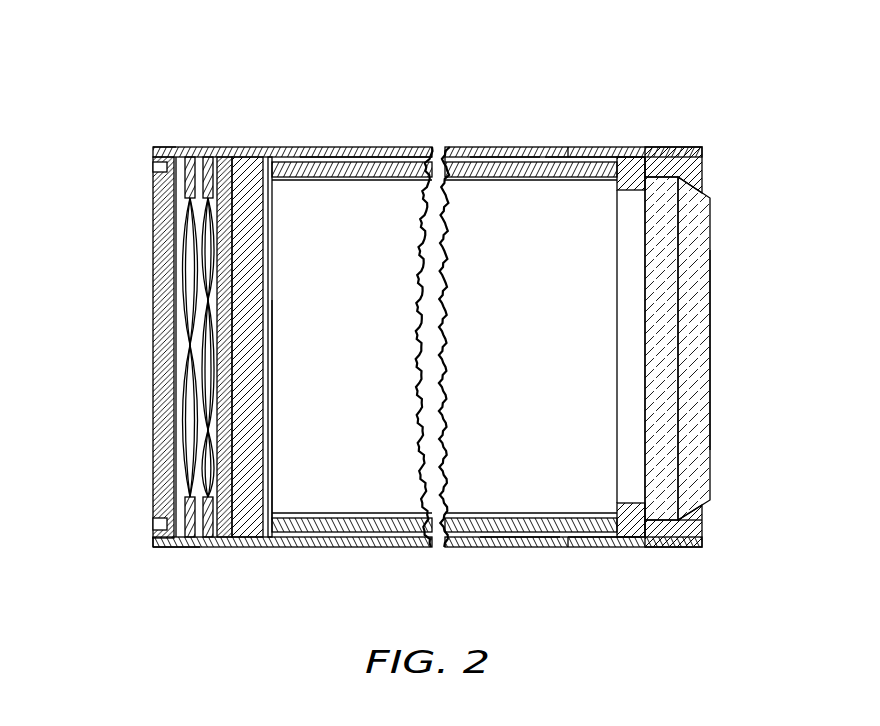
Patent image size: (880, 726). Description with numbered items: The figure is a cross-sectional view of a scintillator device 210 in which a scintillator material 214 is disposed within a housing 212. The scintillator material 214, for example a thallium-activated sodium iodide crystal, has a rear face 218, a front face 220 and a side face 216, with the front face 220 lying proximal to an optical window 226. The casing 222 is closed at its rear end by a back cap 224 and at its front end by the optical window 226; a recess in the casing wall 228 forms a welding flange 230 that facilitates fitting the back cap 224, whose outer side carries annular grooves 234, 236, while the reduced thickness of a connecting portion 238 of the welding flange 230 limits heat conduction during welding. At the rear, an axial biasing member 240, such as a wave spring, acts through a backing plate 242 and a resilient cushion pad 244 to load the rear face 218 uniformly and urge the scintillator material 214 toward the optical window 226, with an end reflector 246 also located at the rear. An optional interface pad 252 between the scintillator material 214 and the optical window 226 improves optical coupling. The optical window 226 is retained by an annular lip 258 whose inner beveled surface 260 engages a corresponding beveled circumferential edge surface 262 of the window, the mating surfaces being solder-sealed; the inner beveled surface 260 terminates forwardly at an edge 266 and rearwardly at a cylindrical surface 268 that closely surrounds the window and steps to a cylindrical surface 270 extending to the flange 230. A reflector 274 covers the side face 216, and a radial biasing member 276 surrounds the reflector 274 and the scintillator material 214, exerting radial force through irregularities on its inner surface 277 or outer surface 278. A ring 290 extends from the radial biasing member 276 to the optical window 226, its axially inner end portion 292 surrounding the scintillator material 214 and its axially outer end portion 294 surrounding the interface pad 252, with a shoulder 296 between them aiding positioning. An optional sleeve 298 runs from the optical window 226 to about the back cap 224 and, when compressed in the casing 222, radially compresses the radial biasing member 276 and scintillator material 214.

The scintillator device 210 is at (126, 36).
The housing 212 is at (462, 547).
The scintillator material 214 is at (325, 364).
The side face 216 is at (332, 515).
The rear face 218 is at (272, 435).
The front face 220 is at (617, 348).
The casing 222 is at (318, 147).
The back cap 224 is at (158, 462).
The optical window 226 is at (712, 400).
The casing wall 228 is at (515, 540).
The welding flange 230 is at (162, 546).
The annular groove 234 is at (153, 165).
The annular groove 236 is at (155, 522).
The connecting portion 238 is at (166, 150).
The axial biasing member 240 is at (183, 357).
The backing plate 242 is at (223, 150).
The cushion pad 244 is at (248, 530).
The end reflector 246 is at (265, 290).
The interface pad 252 is at (632, 442).
The annular lip 258 is at (702, 167).
The inner beveled surface 260 is at (693, 195).
The beveled circumferential edge surface 262 is at (690, 180).
The edge 266 is at (705, 505).
The cylindrical surface 268 is at (665, 547).
The cylindrical surface 270 is at (592, 547).
The reflector 274 is at (520, 178).
The radial biasing member 276 is at (449, 157).
The inner surface 277 is at (472, 178).
The outer surface 278 is at (495, 160).
The ring 290 is at (617, 185).
The axially inner end portion 292 is at (578, 156).
The axially outer end portion 294 is at (630, 155).
The shoulder 296 is at (622, 508).
The sleeve 298 is at (398, 154).